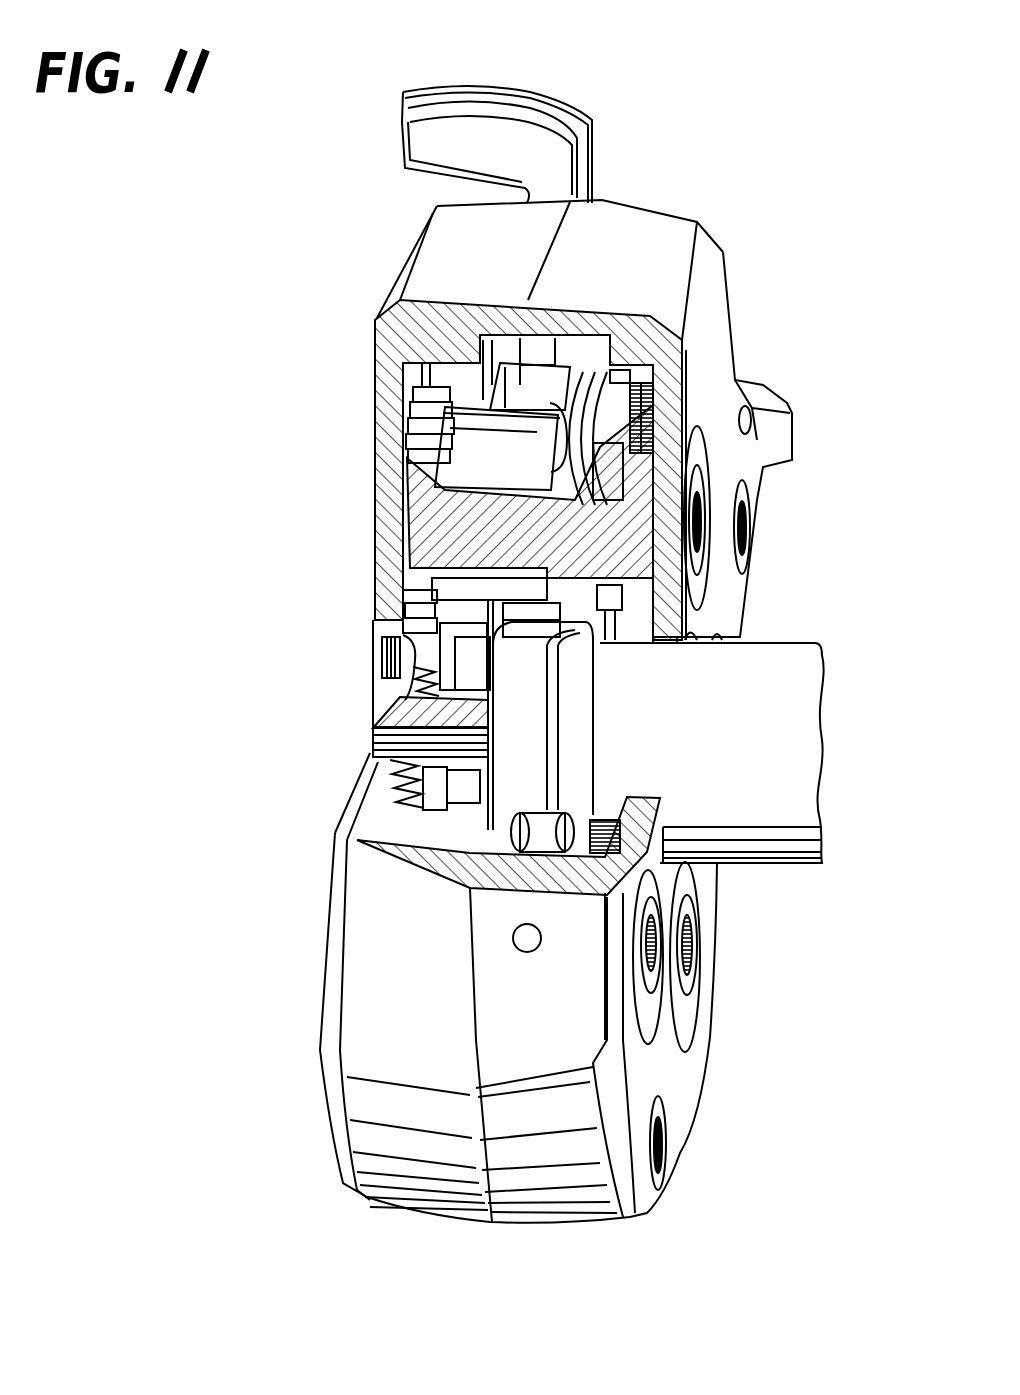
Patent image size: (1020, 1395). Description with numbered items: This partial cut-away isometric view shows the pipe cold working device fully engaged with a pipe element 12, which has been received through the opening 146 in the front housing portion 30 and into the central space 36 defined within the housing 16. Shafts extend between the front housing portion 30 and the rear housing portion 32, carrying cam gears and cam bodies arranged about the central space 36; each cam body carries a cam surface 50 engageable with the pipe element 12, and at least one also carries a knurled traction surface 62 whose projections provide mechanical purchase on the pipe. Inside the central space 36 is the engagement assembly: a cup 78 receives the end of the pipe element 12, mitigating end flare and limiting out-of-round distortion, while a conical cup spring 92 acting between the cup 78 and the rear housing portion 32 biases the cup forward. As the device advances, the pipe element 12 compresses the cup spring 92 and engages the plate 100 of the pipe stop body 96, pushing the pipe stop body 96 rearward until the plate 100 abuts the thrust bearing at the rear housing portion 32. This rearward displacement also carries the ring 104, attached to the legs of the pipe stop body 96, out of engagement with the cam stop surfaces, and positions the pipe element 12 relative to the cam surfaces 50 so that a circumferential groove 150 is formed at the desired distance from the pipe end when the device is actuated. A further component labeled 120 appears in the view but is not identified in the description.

The pipe element 12 is at (790, 648).
The housing 16 is at (617, 203).
The front housing portion 30 is at (667, 228).
The rear housing portion 32 is at (450, 247).
The central space 36 is at (415, 736).
The cam surface 50 is at (600, 378).
The traction surface 62 is at (660, 410).
The cup 78 is at (467, 830).
The cup spring 92 is at (390, 829).
The pipe stop body 96 is at (378, 621).
The plate 100 is at (393, 763).
The ring 104 is at (500, 827).
The clip flange 120 is at (495, 90).
The opening 146 is at (684, 640).
The circumferential groove 150 is at (580, 712).